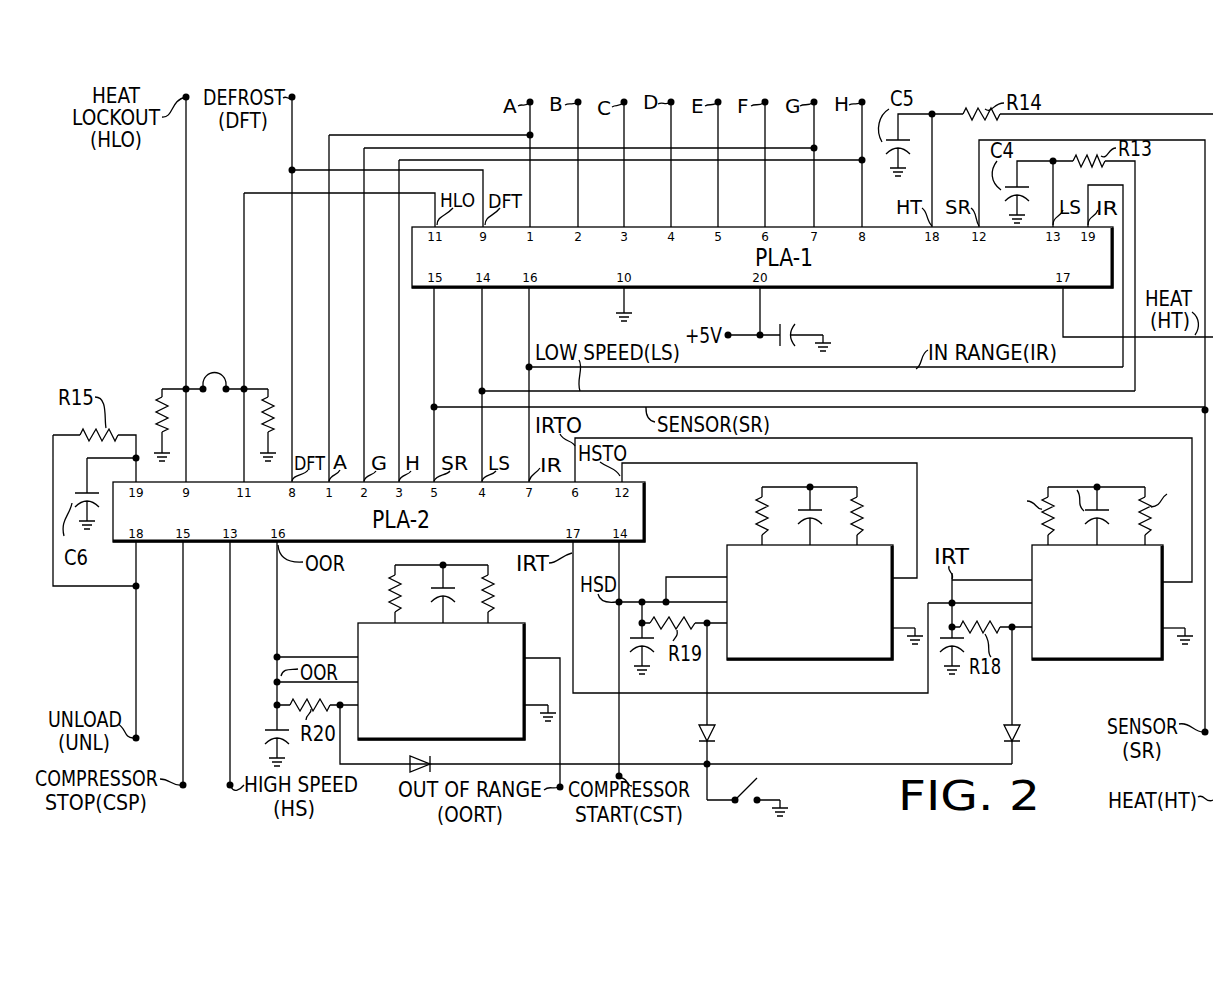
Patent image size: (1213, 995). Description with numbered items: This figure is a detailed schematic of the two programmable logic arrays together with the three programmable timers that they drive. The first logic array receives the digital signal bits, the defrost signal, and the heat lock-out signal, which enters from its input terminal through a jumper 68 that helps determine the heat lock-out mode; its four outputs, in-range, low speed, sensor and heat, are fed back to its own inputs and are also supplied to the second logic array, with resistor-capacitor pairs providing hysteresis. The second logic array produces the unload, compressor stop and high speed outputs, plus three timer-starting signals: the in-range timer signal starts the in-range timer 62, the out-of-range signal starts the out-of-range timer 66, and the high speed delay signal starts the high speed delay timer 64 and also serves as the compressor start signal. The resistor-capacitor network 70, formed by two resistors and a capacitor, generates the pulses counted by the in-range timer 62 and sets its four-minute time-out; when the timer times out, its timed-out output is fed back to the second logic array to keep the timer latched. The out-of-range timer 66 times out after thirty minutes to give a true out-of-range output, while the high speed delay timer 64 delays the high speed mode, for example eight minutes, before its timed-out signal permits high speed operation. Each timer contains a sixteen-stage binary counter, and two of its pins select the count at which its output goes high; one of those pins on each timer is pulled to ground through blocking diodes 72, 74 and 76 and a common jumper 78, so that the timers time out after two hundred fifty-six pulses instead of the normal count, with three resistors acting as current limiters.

The in-range timer 62 is at (1081, 661).
The high speed delay timer 64 is at (748, 661).
The out-of-range timer 66 is at (484, 741).
The jumper 68 is at (213, 378).
The resistor-capacitor network 70 is at (1127, 481).
The blocking diode 72 is at (1022, 736).
The blocking diode 74 is at (715, 733).
The blocking diode 76 is at (414, 758).
The jumper 78 is at (764, 786).